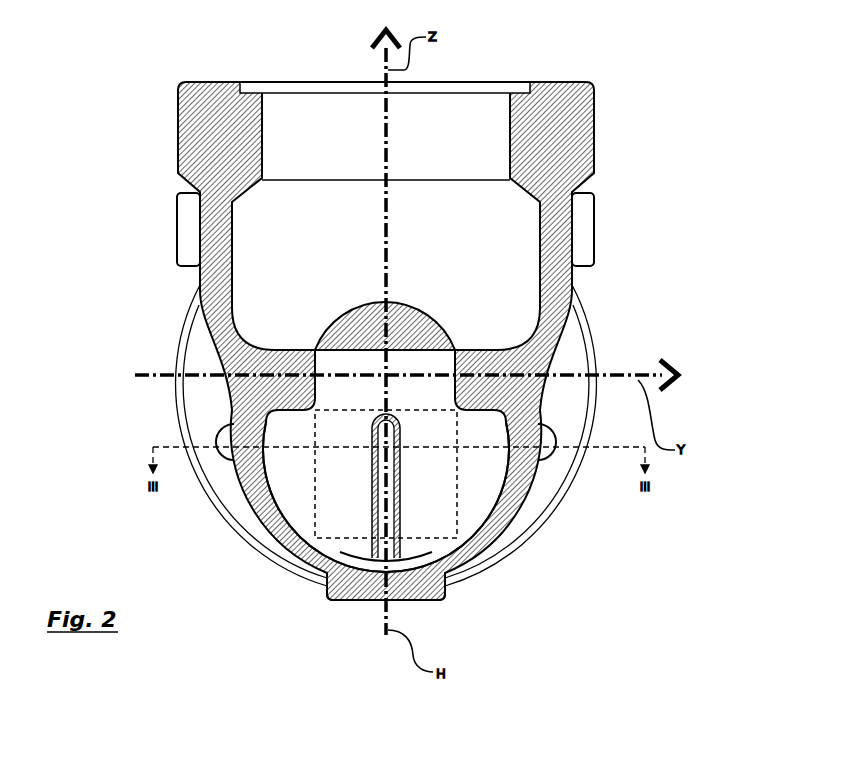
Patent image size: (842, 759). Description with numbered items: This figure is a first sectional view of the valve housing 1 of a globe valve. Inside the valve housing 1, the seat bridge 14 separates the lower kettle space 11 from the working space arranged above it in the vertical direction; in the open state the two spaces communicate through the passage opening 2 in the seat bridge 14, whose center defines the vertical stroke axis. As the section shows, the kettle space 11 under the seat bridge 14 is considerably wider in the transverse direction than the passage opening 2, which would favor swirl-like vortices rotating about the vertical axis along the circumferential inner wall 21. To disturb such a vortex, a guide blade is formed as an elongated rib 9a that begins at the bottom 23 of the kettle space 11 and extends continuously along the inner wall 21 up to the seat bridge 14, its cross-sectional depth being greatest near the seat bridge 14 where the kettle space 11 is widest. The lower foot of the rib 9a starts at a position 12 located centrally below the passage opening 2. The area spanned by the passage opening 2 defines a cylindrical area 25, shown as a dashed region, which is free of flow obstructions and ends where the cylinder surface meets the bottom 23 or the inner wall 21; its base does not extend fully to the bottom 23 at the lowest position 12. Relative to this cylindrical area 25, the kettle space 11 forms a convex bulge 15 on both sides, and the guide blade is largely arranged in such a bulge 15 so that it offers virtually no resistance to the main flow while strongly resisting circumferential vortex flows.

The valve housing 1 is at (553, 259).
The seat bridge 14 is at (473, 362).
The passage opening 2 is at (428, 398).
The kettle space 11 is at (300, 459).
The inner wall 21 is at (287, 500).
The convex bulge 15 is at (299, 512).
The position 12 is at (366, 552).
The bottom 23 is at (393, 482).
The rib 9a is at (417, 558).
The cylindrical area 25 is at (458, 472).